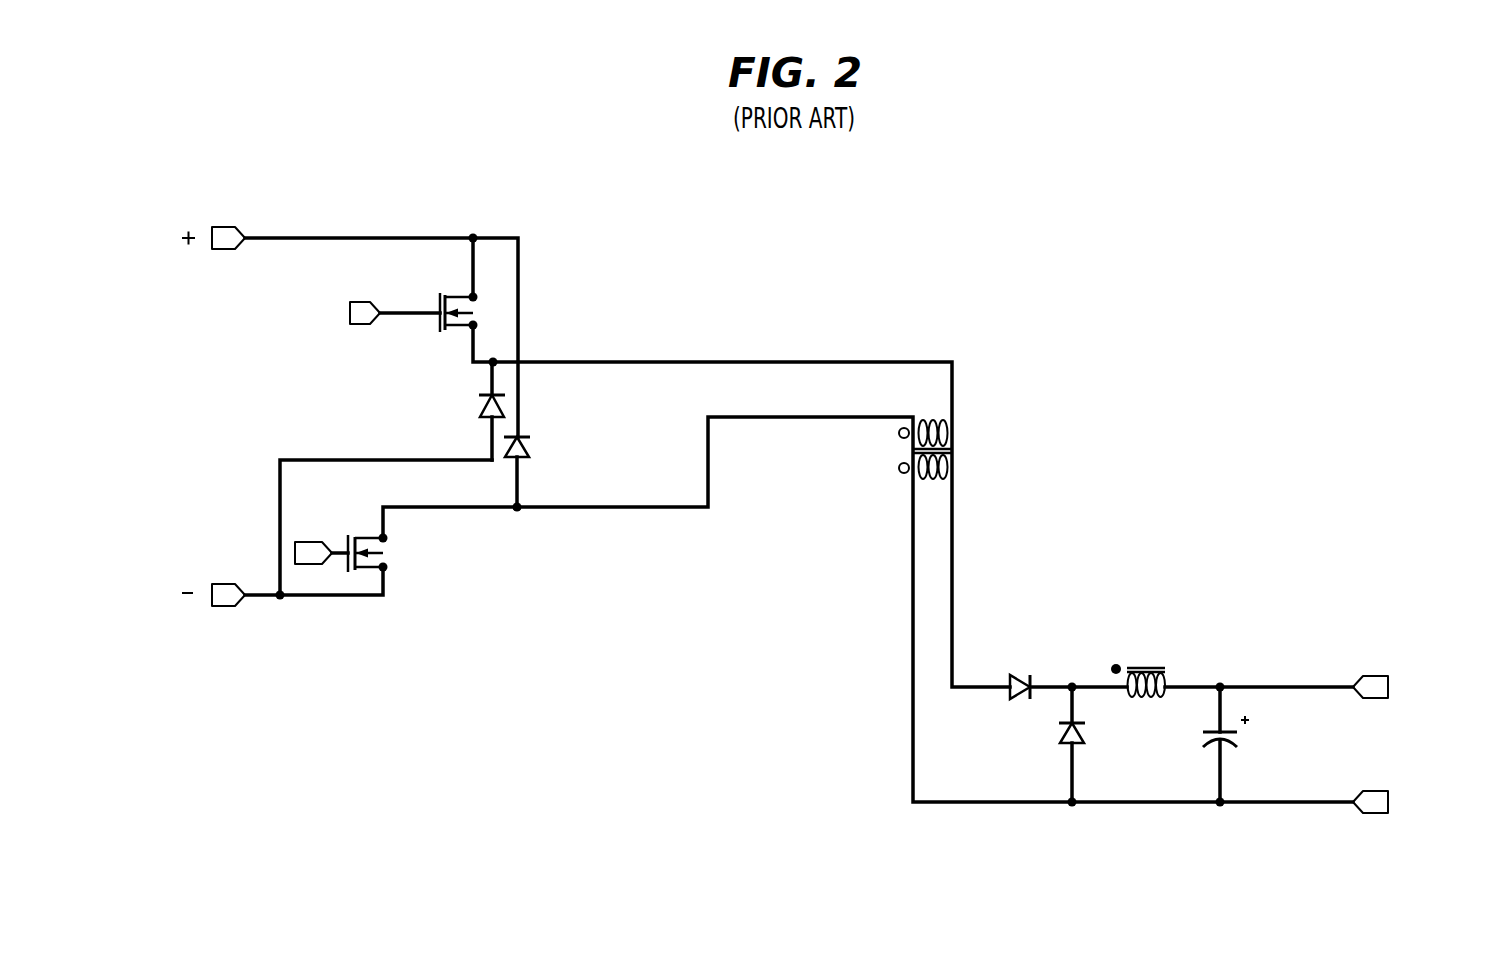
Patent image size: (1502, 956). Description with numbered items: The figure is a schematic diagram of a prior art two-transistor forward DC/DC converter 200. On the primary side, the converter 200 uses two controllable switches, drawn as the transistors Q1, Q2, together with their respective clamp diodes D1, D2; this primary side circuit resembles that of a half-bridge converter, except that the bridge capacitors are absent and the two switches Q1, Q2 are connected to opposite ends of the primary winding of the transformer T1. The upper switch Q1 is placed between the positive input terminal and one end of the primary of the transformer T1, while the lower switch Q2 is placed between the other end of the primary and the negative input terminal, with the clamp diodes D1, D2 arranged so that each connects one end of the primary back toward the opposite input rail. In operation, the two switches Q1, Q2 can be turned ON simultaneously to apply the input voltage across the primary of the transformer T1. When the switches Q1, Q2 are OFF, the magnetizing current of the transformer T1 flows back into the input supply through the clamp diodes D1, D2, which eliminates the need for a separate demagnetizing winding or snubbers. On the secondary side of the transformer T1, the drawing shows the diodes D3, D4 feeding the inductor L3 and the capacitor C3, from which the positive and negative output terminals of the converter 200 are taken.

The two-transistor forward DC/DC converter 200 is at (1086, 341).
The first switching transistor Q1 is at (474, 312).
The second switching transistor Q2 is at (386, 553).
The first diode D1 is at (476, 406).
The second diode D2 is at (537, 448).
The third diode (output rectifier) D3 is at (1021, 708).
The fourth diode (freewheeling) D4 is at (1088, 738).
The transformer T1 is at (947, 449).
The output inductor L3 is at (1138, 665).
The output capacitor C3 is at (1236, 735).